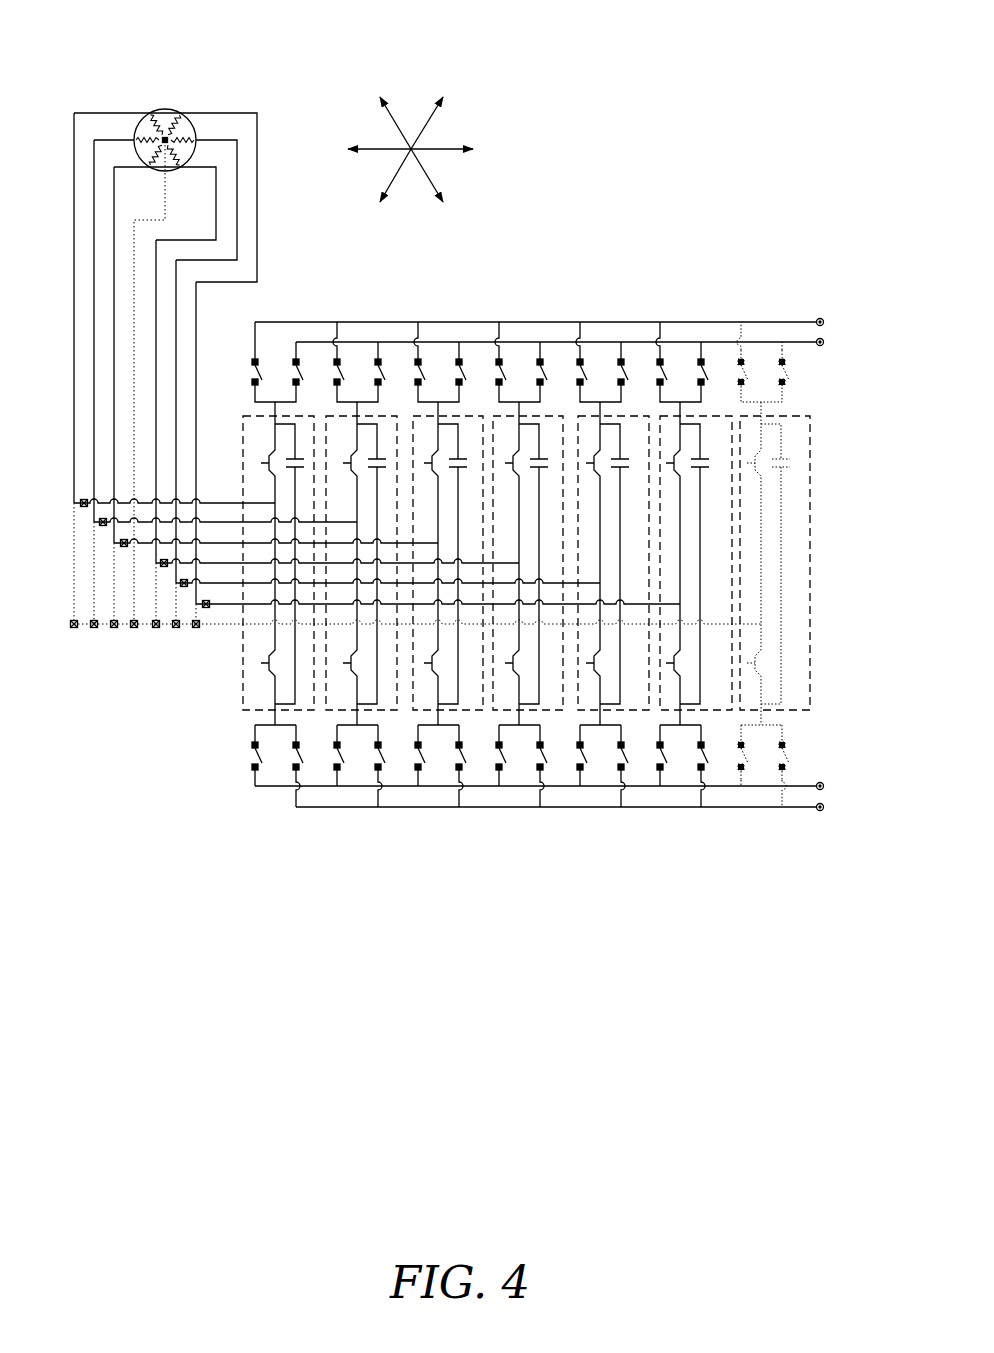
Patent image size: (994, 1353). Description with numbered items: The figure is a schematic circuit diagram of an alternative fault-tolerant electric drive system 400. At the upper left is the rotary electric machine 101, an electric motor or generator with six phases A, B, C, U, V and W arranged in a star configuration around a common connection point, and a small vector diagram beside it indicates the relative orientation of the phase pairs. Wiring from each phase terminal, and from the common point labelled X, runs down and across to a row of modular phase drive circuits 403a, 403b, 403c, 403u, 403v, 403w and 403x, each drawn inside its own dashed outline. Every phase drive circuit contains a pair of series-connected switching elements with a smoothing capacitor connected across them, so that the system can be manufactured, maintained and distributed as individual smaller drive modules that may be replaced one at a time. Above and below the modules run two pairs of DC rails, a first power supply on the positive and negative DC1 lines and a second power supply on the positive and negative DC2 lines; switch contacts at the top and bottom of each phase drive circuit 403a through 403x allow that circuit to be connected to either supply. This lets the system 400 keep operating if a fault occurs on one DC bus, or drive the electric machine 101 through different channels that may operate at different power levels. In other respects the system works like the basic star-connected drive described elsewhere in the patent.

The rotary electric machine 101 is at (167, 112).
The electric drive system 400 is at (645, 155).
The phase drive circuit 403a is at (243, 710).
The phase drive circuit 403b is at (326, 710).
The phase drive circuit 403c is at (413, 710).
The phase drive circuit 403u is at (493, 710).
The phase drive circuit 403v is at (578, 710).
The phase drive circuit 403w is at (660, 712).
The phase drive circuit 403x is at (742, 712).